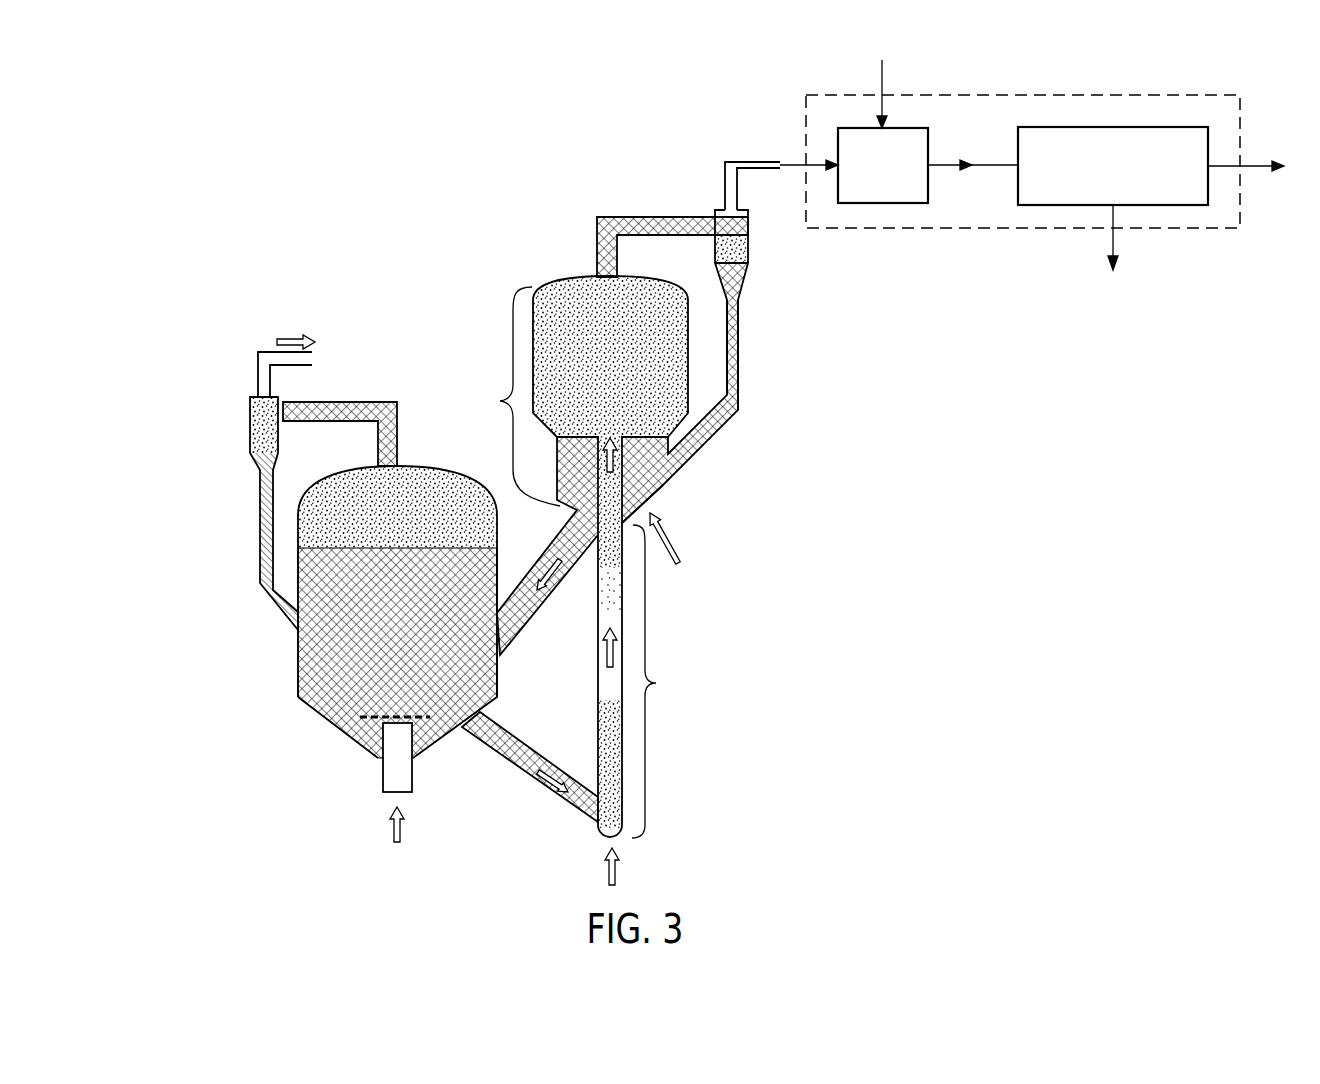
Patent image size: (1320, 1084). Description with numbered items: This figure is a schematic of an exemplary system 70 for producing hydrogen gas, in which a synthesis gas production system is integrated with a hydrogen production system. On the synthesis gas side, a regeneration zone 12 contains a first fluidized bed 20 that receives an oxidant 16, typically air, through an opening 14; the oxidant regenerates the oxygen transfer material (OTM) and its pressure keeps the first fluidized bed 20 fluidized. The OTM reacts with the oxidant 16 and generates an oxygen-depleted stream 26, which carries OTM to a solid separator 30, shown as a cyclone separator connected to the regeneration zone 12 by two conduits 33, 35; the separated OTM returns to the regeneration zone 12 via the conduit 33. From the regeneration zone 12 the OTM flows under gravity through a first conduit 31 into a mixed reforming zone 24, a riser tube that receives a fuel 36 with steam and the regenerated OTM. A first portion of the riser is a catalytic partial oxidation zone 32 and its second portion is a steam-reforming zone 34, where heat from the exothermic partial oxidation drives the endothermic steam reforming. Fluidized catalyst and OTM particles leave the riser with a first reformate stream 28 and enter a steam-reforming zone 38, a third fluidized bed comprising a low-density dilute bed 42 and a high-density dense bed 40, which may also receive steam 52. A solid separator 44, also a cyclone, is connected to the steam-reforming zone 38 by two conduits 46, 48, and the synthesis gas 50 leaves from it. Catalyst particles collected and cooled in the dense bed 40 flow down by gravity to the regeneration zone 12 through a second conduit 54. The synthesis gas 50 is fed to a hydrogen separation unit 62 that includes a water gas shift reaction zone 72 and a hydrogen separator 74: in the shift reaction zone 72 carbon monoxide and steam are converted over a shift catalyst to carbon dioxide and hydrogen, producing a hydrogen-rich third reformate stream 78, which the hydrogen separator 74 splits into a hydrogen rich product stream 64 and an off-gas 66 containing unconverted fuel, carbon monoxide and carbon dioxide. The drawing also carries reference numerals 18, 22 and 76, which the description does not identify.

The system for producing hydrogen gas 70 is at (203, 240).
The regeneration zone 12 is at (424, 594).
The opening 14 is at (405, 775).
The oxidant 16 is at (402, 828).
The dense fluidized bed 18 is at (445, 685).
The first fluidized bed 20 is at (495, 578).
The freeboard region 22 is at (454, 482).
The mixed reforming zone 24 is at (615, 637).
The oxygen-depleted stream 26 is at (300, 362).
The first reformate stream 28 is at (665, 470).
The solid separator 30 is at (244, 513).
The first conduit 31 is at (507, 762).
The catalytic partial oxidation zone 32 is at (597, 735).
The conduit 33 is at (260, 538).
The conduit 35 is at (354, 402).
The steam-reforming zone 34 is at (548, 546).
The fuel 36 is at (618, 870).
The steam-reforming zone 38 is at (640, 459).
The dense bed 40 is at (655, 505).
The dilute bed 42 is at (668, 370).
The solid separator 44 is at (740, 250).
The conduit 46 is at (662, 217).
The conduit 48 is at (738, 325).
The synthesis gas 50 is at (789, 161).
The steam 52 is at (676, 550).
The second conduit 54 is at (532, 607).
The hydrogen separation unit 62 is at (983, 230).
The hydrogen rich product stream 64 is at (1245, 164).
The off-gas 66 is at (1118, 239).
The water gas shift reaction zone 72 is at (888, 207).
The hydrogen separator 74 is at (1153, 127).
The steam feed 76 is at (885, 78).
The third reformate stream 78 is at (937, 160).